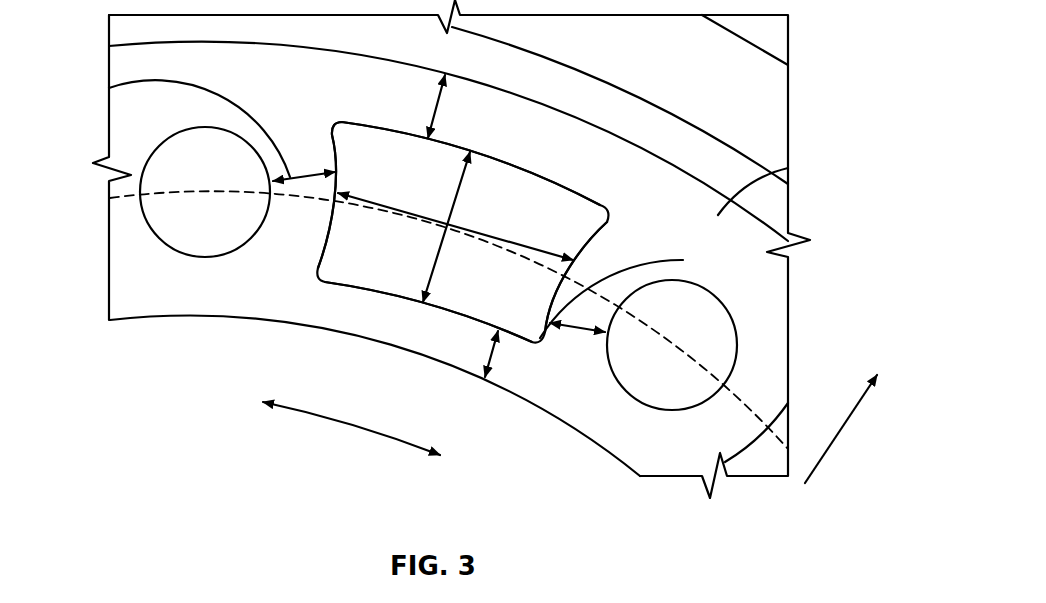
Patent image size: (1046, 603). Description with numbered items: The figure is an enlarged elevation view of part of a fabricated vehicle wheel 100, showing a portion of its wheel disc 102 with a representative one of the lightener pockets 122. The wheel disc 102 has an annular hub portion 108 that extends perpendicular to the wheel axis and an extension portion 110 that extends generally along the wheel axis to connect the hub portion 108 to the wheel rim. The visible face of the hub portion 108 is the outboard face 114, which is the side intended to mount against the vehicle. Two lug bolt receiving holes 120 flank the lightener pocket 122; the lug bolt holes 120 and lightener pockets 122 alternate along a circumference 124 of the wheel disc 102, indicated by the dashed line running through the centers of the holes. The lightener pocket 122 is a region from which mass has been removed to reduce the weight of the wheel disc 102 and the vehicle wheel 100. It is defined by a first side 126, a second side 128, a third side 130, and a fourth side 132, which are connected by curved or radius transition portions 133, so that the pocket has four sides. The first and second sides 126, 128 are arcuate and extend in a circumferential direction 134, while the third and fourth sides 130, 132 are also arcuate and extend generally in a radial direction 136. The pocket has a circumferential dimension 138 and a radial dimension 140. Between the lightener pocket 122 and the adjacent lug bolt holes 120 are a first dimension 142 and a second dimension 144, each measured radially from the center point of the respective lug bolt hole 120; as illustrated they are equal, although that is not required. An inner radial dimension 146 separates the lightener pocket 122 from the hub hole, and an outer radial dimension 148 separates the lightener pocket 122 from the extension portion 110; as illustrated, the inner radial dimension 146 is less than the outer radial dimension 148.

The fabricated vehicle wheel 100 is at (822, 215).
The wheel disc 102 is at (96, 254).
The hub portion 108 is at (428, 356).
The extension portion 110 is at (775, 45).
The outboard face 114 is at (786, 171).
The lug bolt receiving holes 120 is at (207, 240).
The lightener pockets 122 is at (350, 268).
The circumference 124 is at (685, 357).
The first side 126 is at (470, 318).
The second side 128 is at (542, 178).
The third side 130 is at (328, 135).
The fourth side 132 is at (583, 257).
The transition portions 133 is at (336, 122).
The circumferential direction 134 is at (352, 425).
The radial direction 136 is at (836, 437).
The circumferential dimension 138 is at (390, 205).
The radial dimension 140 is at (448, 245).
The first dimension 142 is at (125, 92).
The second dimension 144 is at (650, 262).
The inner radial dimension 146 is at (499, 355).
The outer radial dimension 148 is at (438, 108).